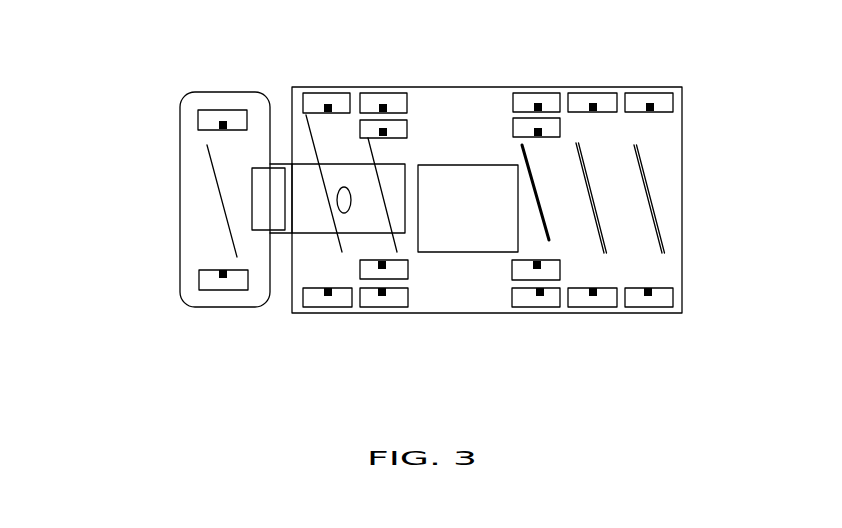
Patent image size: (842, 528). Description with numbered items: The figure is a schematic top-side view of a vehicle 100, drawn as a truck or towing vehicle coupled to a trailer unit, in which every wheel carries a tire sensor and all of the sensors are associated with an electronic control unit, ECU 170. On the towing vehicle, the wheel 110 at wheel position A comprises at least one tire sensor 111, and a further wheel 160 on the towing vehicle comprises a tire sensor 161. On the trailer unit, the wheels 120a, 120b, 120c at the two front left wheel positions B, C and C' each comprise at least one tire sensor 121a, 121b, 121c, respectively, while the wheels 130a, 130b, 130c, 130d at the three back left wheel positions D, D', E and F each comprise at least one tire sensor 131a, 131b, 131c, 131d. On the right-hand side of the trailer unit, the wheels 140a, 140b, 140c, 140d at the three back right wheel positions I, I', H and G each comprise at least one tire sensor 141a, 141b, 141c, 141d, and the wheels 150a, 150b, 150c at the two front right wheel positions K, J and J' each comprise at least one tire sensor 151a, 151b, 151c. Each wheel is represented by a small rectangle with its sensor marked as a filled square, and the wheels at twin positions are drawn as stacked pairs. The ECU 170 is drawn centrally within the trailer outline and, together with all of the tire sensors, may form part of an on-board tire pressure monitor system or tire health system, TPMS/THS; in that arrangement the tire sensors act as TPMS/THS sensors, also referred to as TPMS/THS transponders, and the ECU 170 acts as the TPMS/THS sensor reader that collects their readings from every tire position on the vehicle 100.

The vehicle 100 is at (158, 80).
The wheel 110 is at (223, 290).
The tire sensor 111 is at (223, 273).
The wheel 120a is at (317, 307).
The wheel 120b is at (388, 308).
The wheel 120c is at (360, 309).
The tire sensor 121a is at (328, 290).
The tire sensor 121b is at (386, 292).
The tire sensor 121c is at (386, 265).
The wheel 130a is at (535, 308).
The wheel 130b is at (557, 281).
The wheel 130c is at (596, 308).
The wheel 130d is at (654, 308).
The tire sensor 131a is at (540, 294).
The tire sensor 131b is at (539, 262).
The tire sensor 131c is at (593, 290).
The tire sensor 131d is at (648, 290).
The wheel 140a is at (538, 93).
The wheel 140b is at (558, 118).
The wheel 140c is at (595, 93).
The wheel 140d is at (647, 93).
The tire sensor 141a is at (536, 106).
The tire sensor 141b is at (538, 136).
The tire sensor 141c is at (593, 111).
The tire sensor 141d is at (650, 111).
The wheel 150a is at (330, 93).
The wheel 150b is at (388, 92).
The wheel 150c is at (367, 112).
The tire sensor 151a is at (333, 113).
The tire sensor 151b is at (386, 108).
The tire sensor 151c is at (386, 132).
The wheel 160 is at (222, 110).
The tire sensor 161 is at (223, 129).
The electronic control unit (ECU) 170 is at (487, 206).